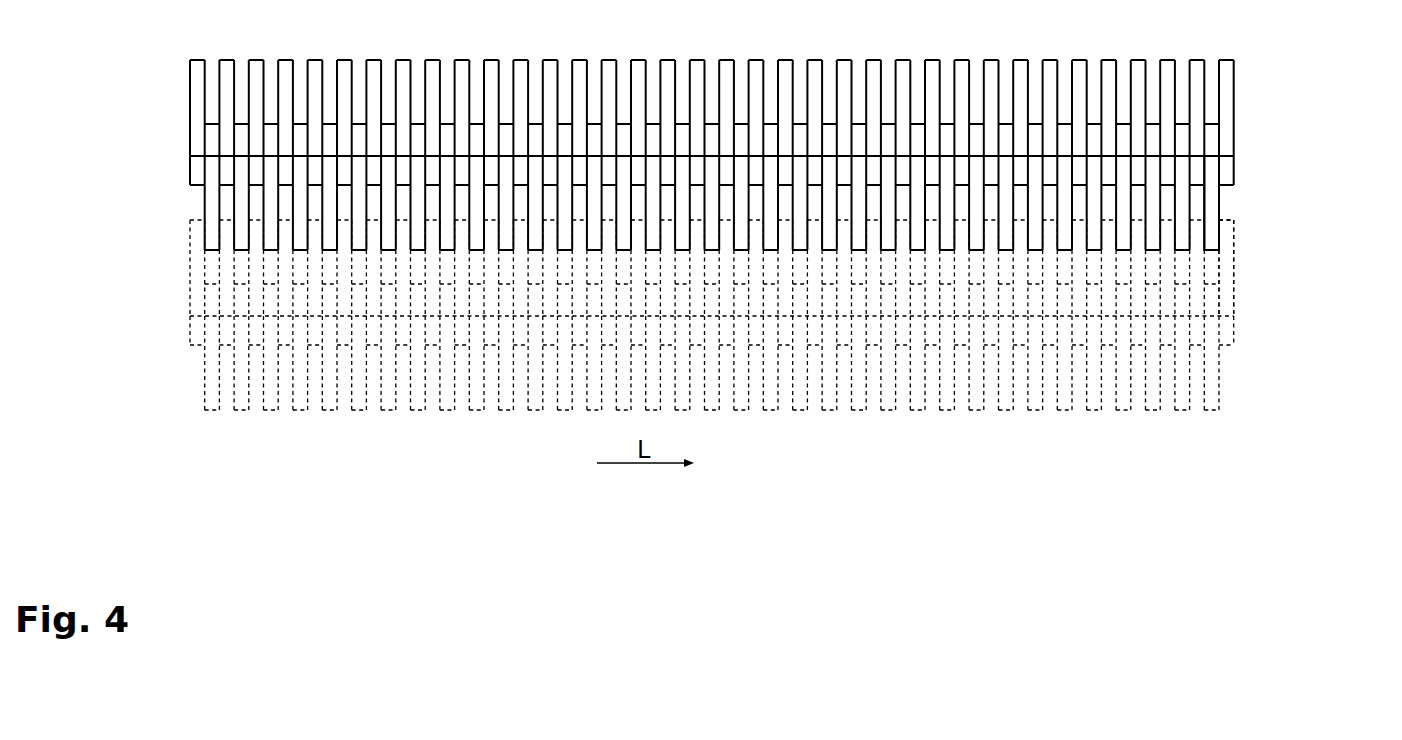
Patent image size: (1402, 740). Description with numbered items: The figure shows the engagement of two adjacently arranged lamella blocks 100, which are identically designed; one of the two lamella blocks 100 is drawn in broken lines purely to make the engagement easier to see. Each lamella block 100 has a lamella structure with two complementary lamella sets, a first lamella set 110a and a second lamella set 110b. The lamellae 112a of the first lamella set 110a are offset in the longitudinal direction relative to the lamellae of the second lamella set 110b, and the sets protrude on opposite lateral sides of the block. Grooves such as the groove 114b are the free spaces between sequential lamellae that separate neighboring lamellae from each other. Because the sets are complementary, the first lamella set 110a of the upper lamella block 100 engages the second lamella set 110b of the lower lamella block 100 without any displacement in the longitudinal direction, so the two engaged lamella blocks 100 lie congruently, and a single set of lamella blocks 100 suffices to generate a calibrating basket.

The lamella block 100 is at (728, 235).
The first lamella set 110a is at (728, 203).
The second lamella set 110b is at (728, 282).
The lamella 112a is at (1210, 198).
The groove 114b is at (1208, 263).